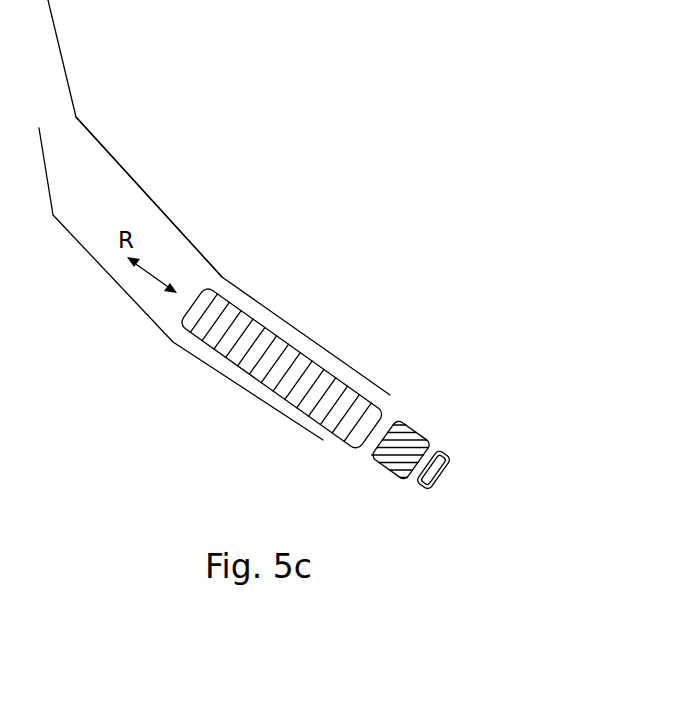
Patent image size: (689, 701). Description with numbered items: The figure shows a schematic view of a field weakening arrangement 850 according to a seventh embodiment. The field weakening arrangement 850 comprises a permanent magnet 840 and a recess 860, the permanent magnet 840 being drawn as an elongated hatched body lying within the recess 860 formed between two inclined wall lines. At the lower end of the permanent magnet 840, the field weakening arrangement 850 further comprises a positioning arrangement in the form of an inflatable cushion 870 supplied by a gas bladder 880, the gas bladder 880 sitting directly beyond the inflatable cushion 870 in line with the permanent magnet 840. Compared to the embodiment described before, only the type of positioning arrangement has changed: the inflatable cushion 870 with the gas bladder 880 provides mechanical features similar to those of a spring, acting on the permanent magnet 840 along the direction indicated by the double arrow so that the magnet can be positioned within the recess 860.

The permanent magnet 840 is at (262, 365).
The field weakening arrangement 850 is at (380, 190).
The recess 860 is at (93, 163).
The inflatable cushion 870 is at (413, 428).
The gas bladder 880 is at (438, 483).